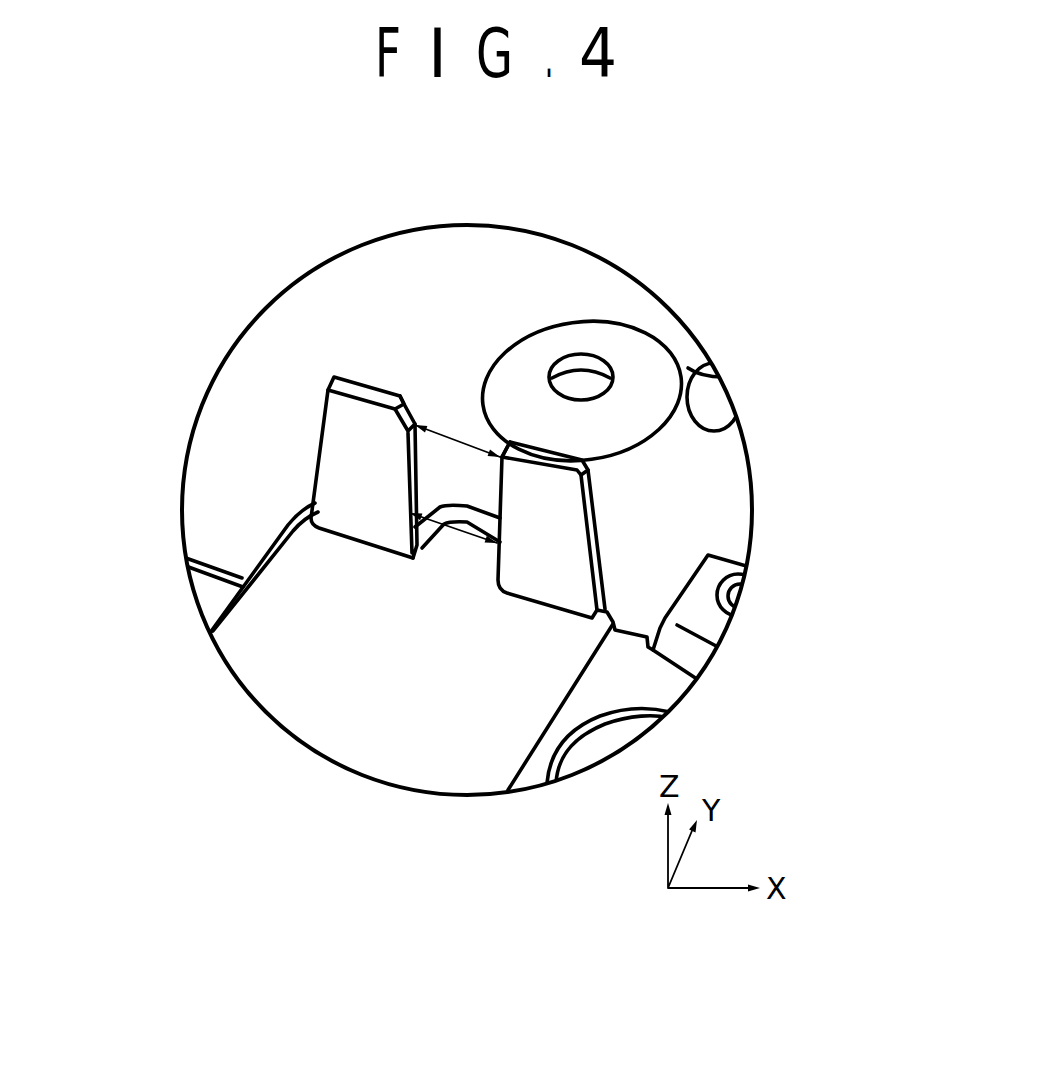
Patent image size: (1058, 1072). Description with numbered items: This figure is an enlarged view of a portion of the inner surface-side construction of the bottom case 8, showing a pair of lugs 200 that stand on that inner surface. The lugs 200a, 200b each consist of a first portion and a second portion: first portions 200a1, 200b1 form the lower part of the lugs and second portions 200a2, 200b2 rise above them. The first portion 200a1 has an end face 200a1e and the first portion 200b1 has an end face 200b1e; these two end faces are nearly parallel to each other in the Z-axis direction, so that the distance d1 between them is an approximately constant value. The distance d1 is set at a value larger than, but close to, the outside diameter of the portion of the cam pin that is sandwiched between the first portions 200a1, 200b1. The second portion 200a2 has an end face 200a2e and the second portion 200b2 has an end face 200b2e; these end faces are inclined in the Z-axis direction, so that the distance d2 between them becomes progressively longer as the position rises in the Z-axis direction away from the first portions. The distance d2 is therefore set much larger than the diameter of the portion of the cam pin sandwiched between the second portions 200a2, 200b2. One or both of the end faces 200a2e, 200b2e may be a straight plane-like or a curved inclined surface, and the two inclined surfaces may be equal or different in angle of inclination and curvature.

The bottom case 8 is at (323, 303).
The lugs 200 is at (567, 457).
The lug 200a is at (270, 535).
The first portion 200a1 is at (337, 502).
The second portion 200a2 is at (363, 423).
The end face of first portion 200a1e is at (373, 480).
The end face of second portion 200a2e is at (411, 415).
The lug 200b is at (623, 559).
The first portion 200b1 is at (560, 581).
The second portion 200b2 is at (558, 490).
The end face of first portion 200b1e is at (540, 543).
The end face of second portion 200b2e is at (520, 449).
The distance between end faces of first portions d1 is at (453, 545).
The distance between end faces of second portions d2 is at (457, 456).